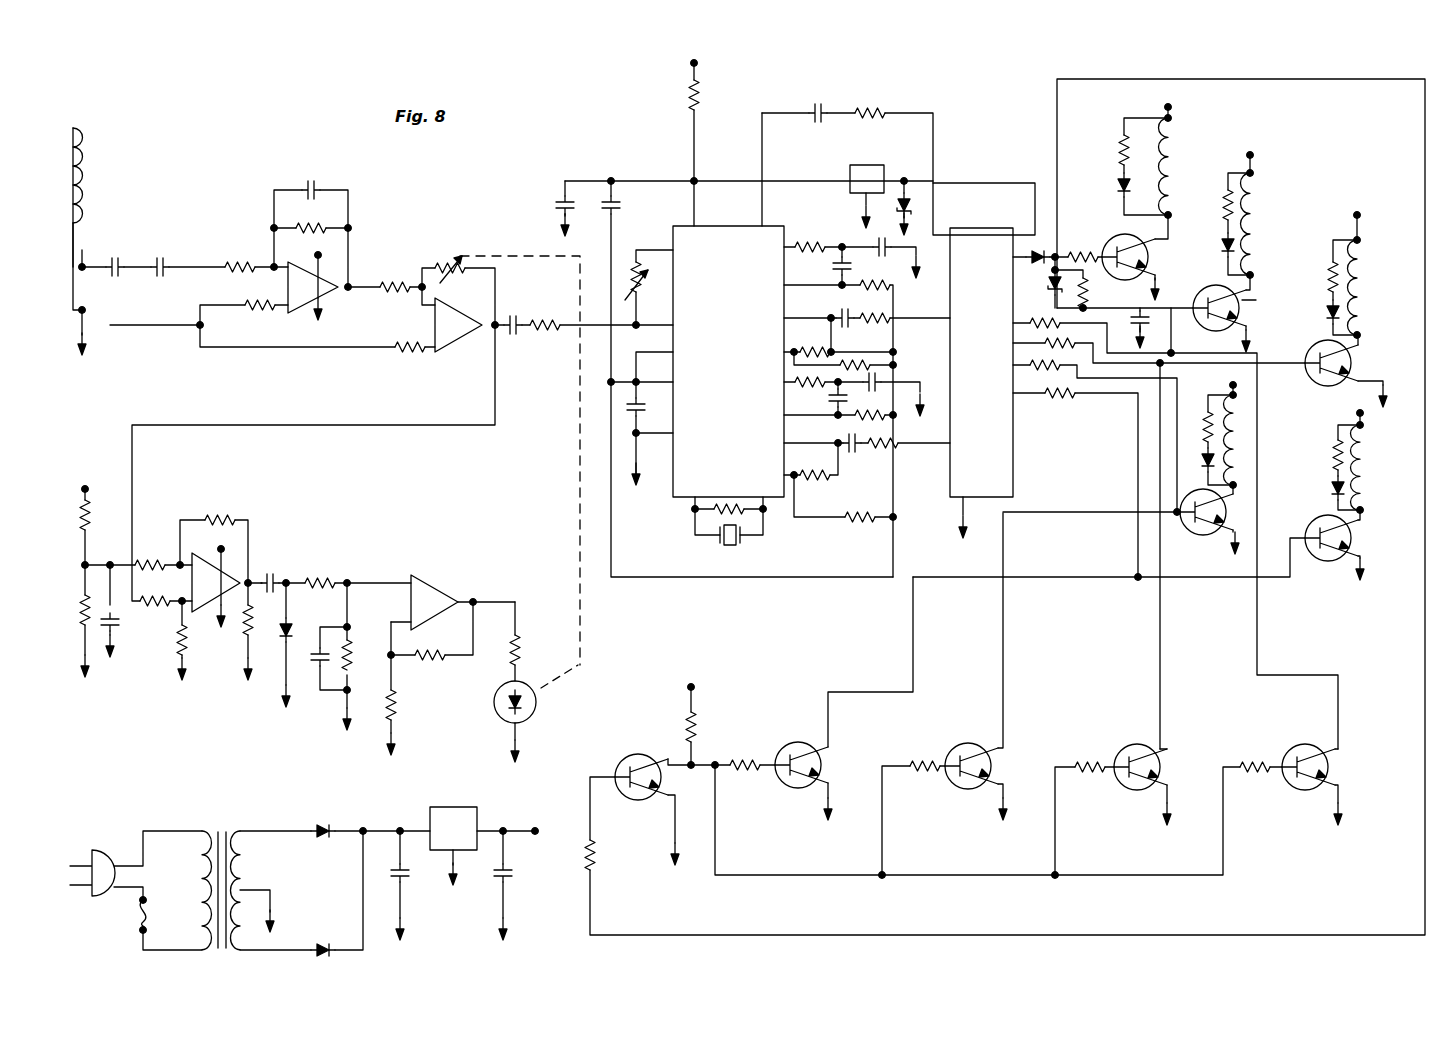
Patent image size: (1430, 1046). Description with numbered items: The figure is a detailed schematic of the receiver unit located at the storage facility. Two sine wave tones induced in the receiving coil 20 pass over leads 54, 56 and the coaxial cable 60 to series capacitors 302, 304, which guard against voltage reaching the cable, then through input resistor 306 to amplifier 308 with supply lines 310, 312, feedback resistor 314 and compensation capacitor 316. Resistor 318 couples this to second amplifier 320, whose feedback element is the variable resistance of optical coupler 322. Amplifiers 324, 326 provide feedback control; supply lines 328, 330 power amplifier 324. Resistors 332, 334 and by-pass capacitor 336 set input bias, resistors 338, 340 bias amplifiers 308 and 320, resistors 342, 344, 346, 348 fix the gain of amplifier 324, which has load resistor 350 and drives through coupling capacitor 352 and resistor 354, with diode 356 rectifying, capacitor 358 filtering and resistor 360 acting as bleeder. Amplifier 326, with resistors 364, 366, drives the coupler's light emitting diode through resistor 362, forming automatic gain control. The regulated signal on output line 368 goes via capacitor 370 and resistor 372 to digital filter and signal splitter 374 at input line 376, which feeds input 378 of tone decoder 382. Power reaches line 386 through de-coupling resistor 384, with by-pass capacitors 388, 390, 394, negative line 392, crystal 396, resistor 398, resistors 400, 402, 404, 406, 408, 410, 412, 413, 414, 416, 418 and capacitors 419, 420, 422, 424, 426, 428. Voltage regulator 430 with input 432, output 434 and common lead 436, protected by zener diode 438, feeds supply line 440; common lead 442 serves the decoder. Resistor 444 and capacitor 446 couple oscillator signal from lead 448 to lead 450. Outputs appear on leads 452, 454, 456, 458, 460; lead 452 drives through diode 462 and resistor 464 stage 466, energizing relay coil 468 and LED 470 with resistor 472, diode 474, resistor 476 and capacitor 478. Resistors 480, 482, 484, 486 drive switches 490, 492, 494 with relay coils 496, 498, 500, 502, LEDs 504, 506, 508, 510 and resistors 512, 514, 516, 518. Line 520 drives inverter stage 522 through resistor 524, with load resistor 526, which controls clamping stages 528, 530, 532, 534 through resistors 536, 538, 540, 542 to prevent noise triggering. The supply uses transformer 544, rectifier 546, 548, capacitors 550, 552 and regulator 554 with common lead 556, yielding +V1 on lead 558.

The receiving coil 20 is at (85, 180).
The lead 54 is at (84, 312).
The lead 56 is at (84, 250).
The cable 60 is at (84, 272).
The capacitor 302 is at (120, 260).
The capacitor 304 is at (165, 260).
The input resistor 306 is at (240, 262).
The amplifier 308 is at (302, 312).
The supply line 310 is at (330, 262).
The supply line 312 is at (325, 300).
The resistor 314 is at (320, 226).
The capacitor 316 is at (318, 186).
The resistor 318 is at (395, 282).
The second amplifier 320 is at (460, 340).
The optical coupler 322 is at (537, 704).
The amplifier 324 is at (240, 578).
The amplifier 326 is at (430, 594).
The supply line 328 is at (232, 555).
The supply line 330 is at (216, 630).
The resistor 332 is at (78, 508).
The resistor 334 is at (78, 640).
The by-pass capacitor 336 is at (116, 645).
The resistor 338 is at (255, 310).
The resistor 340 is at (412, 352).
The resistor 342 is at (148, 560).
The resistor 344 is at (156, 606).
The resistor 346 is at (208, 516).
The resistor 348 is at (175, 665).
The load resistor 350 is at (240, 660).
The coupling capacitor 352 is at (282, 572).
The resistor 354 is at (330, 572).
The diode 356 is at (292, 622).
The capacitor 358 is at (316, 680).
The resistor 360 is at (348, 655).
The resistor 362 is at (524, 655).
The resistor 364 is at (398, 705).
The resistor 366 is at (438, 665).
The output line 368 is at (497, 334).
The capacitor 370 is at (515, 312).
The resistor 372 is at (552, 312).
The digital filter and signal splitter 374 is at (728, 361).
The input line 376 is at (672, 320).
The input 378 is at (950, 318).
The tone decoder unit 382 is at (981, 362).
The de-coupling resistor 384 is at (700, 98).
The line 386 is at (690, 214).
The by-pass capacitor 388 is at (555, 205).
The by-pass capacitor 390 is at (617, 215).
The negative supply line 392 is at (645, 482).
The capacitor 394 is at (650, 408).
The crystal 396 is at (745, 545).
The resistor 398 is at (710, 515).
The resistor 400 is at (650, 278).
The resistor 402 is at (808, 242).
The resistor 404 is at (885, 292).
The resistor 406 is at (885, 324).
The resistor 408 is at (800, 344).
The resistor 410 is at (870, 356).
The resistor 412 is at (800, 378).
The resistor 413 is at (862, 525).
The resistor 414 is at (875, 420).
The resistor 416 is at (890, 448).
The resistor 418 is at (818, 480).
The capacitor 419 is at (870, 244).
The capacitor 420 is at (832, 266).
The capacitor 422 is at (838, 310).
The capacitor 424 is at (884, 376).
The capacitor 426 is at (830, 400).
The capacitor 428 is at (862, 460).
The integrated circuit voltage regulator 430 is at (868, 165).
The input 432 is at (806, 178).
The output 434 is at (895, 178).
The common lead 436 is at (860, 212).
The zener diode 438 is at (914, 202).
The supply line 440 is at (955, 183).
The common lead 442 is at (955, 520).
The series resistor 444 is at (868, 108).
The capacitor 446 is at (822, 104).
The lead 448 is at (760, 214).
The lead 450 is at (936, 212).
The lead 452 is at (1025, 254).
The lead 454 is at (1022, 318).
The lead 456 is at (1030, 344).
The lead 458 is at (1018, 368).
The lead 460 is at (1030, 400).
The diode 462 is at (1040, 250).
The resistor 464 is at (1080, 252).
The stage 466 is at (1150, 258).
The relay coil 468 is at (1176, 162).
The LED 470 is at (1118, 184).
The series resistor 472 is at (1118, 150).
The diode 474 is at (1048, 282).
The resistor 476 is at (1090, 292).
The capacitor 478 is at (1145, 312).
The resistor 480 is at (1022, 324).
The resistor 482 is at (1052, 340).
The resistor 484 is at (1052, 370).
The resistor 486 is at (1052, 400).
The transistor switch 490 is at (1352, 372).
The transistor switch 492 is at (1228, 514).
The transistor switch 494 is at (1352, 544).
The relay coil 496 is at (1255, 222).
The relay coil 498 is at (1366, 278).
The relay coil 500 is at (1240, 440).
The relay coil 502 is at (1370, 468).
The LED 504 is at (1222, 244).
The LED 506 is at (1327, 310).
The LED 508 is at (1218, 460).
The LED 510 is at (1332, 490).
The resistor 512 is at (1222, 206).
The resistor 514 is at (1328, 262).
The resistor 516 is at (1204, 428).
The resistor 518 is at (1334, 452).
The line 520 is at (1055, 142).
The inverter stage 522 is at (640, 755).
The resistor 524 is at (600, 856).
The load resistor 526 is at (698, 745).
The clamping stage 528 is at (802, 748).
The clamping stage 530 is at (972, 748).
The clamping stage 532 is at (1148, 748).
The clamping stage 534 is at (1305, 748).
The resistor 536 is at (745, 775).
The resistor 538 is at (925, 778).
The resistor 540 is at (1092, 778).
The resistor 542 is at (1260, 778).
The transformer 544 is at (212, 825).
The full wave rectifier diode 546 is at (332, 824).
The full wave rectifier diode 548 is at (332, 940).
The filter capacitor 550 is at (408, 878).
The filter capacitor 552 is at (510, 878).
The integrated circuit voltage regulator 554 is at (460, 812).
The common lead 556 is at (458, 882).
The lead 558 is at (537, 834).